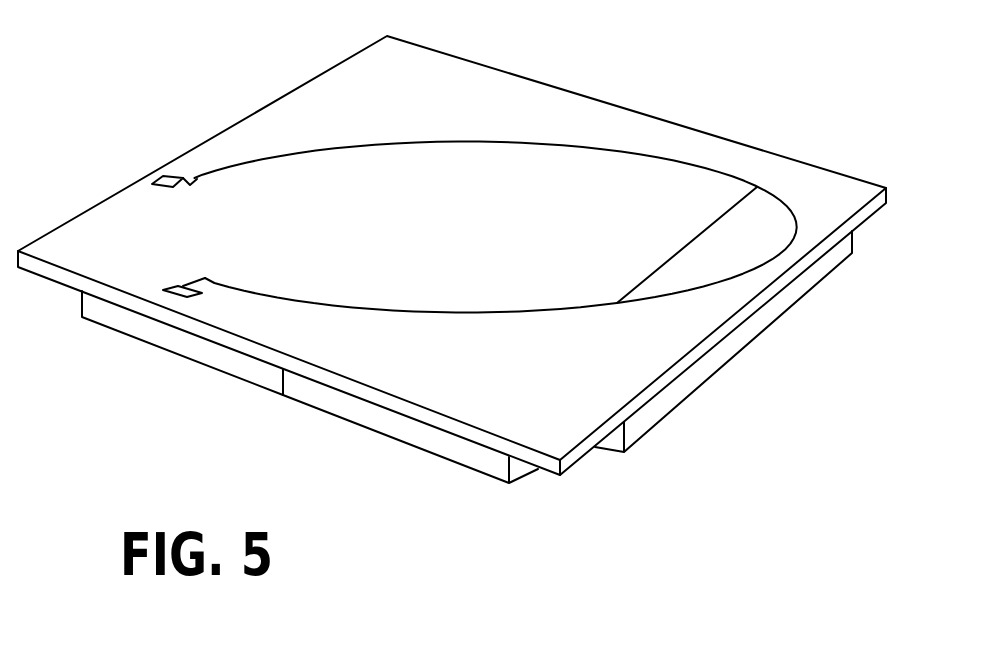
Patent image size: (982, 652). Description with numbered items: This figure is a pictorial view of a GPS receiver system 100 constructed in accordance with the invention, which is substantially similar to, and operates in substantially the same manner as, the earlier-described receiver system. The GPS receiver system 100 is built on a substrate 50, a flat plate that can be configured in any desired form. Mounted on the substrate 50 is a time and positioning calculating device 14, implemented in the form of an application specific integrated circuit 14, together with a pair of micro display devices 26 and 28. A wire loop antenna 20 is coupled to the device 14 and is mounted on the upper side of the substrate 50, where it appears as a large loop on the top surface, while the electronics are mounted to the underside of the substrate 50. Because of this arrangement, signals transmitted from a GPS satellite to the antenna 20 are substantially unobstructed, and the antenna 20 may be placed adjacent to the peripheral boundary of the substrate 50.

The GPS receiver system 100 is at (226, 401).
The substrate 50 is at (563, 82).
The wire loop antenna 20 is at (530, 143).
The micro display device 26 is at (167, 350).
The micro display device 28 is at (486, 475).
The time and positioning calculating device 14 is at (802, 298).